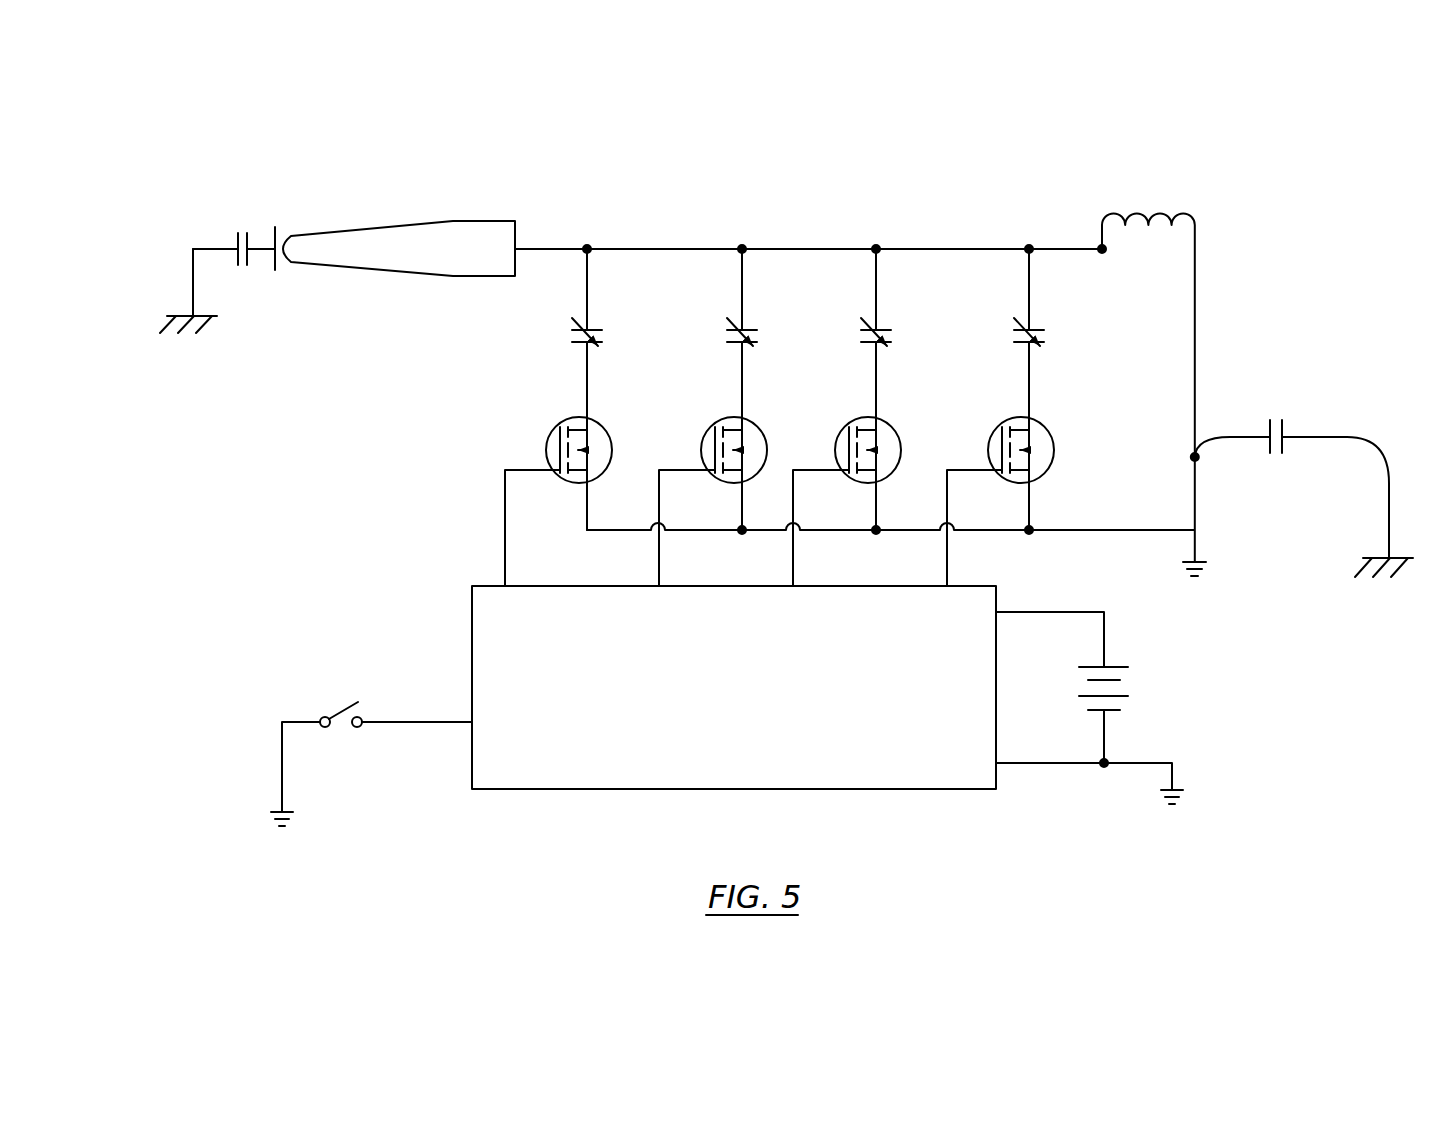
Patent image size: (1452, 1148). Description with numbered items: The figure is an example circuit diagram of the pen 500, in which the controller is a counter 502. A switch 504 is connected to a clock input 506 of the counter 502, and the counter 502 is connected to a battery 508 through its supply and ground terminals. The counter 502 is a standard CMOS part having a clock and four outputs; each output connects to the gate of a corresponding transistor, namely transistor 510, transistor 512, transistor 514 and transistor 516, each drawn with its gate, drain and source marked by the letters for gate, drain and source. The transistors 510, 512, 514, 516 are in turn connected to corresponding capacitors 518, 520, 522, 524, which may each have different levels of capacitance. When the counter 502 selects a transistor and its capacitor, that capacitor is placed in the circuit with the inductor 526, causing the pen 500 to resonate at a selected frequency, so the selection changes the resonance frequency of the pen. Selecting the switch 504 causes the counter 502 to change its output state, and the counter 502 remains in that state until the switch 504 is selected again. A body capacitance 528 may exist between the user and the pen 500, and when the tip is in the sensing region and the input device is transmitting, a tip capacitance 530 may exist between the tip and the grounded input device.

The pen 500 is at (1170, 137).
The counter 502 is at (720, 713).
The switch Sw1 504 is at (234, 709).
The clock input 506 is at (389, 687).
The battery Bt1 508 is at (1164, 703).
The transistor Q1 510 is at (547, 428).
The transistor Q2 512 is at (702, 428).
The transistor Q3 514 is at (836, 428).
The transistor Q4 516 is at (1066, 428).
The capacitor Ct1 518 is at (561, 331).
The capacitor Ct2 520 is at (718, 332).
The capacitor Ct3 522 is at (852, 332).
The capacitor Ct4 524 is at (1005, 332).
The inductor 526 is at (1170, 184).
The capacitance Cbody 528 is at (1301, 380).
The capacitance 530 is at (256, 200).